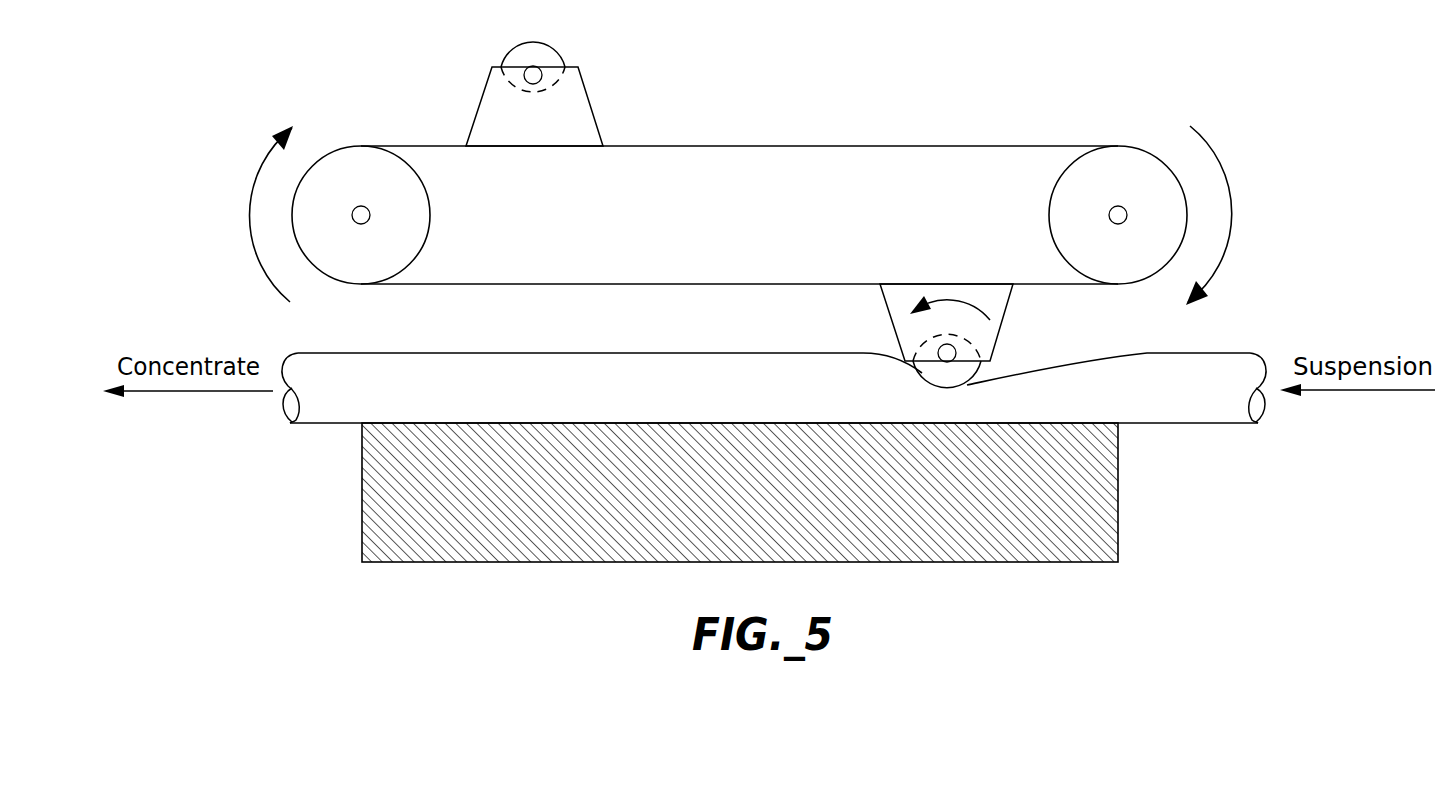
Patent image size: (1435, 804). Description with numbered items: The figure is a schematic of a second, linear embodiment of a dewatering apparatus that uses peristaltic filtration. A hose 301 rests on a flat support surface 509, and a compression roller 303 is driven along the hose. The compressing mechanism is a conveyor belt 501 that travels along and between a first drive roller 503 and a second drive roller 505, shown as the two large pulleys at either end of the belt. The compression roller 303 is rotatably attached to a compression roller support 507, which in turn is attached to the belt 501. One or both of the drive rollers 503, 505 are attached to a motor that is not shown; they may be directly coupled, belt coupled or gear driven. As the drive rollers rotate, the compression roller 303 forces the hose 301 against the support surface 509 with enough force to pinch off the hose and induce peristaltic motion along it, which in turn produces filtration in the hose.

The conveyor belt 501 is at (913, 145).
The first drive roller 503 is at (1118, 205).
The second drive roller 505 is at (362, 205).
The compression roller support 507 is at (1003, 327).
The hose 301 is at (335, 409).
The compression roller 303 is at (983, 368).
The support surface 509 is at (400, 423).